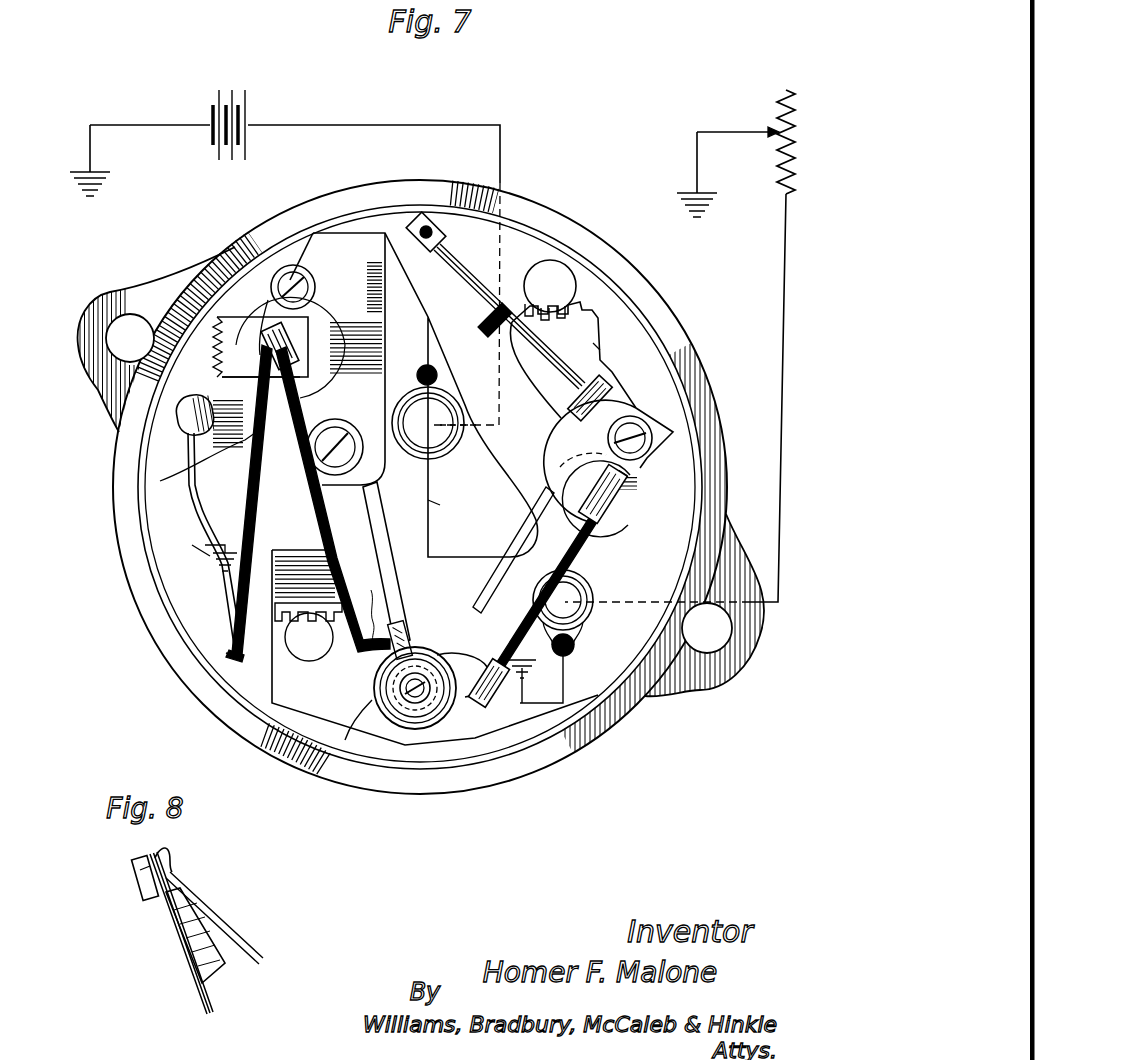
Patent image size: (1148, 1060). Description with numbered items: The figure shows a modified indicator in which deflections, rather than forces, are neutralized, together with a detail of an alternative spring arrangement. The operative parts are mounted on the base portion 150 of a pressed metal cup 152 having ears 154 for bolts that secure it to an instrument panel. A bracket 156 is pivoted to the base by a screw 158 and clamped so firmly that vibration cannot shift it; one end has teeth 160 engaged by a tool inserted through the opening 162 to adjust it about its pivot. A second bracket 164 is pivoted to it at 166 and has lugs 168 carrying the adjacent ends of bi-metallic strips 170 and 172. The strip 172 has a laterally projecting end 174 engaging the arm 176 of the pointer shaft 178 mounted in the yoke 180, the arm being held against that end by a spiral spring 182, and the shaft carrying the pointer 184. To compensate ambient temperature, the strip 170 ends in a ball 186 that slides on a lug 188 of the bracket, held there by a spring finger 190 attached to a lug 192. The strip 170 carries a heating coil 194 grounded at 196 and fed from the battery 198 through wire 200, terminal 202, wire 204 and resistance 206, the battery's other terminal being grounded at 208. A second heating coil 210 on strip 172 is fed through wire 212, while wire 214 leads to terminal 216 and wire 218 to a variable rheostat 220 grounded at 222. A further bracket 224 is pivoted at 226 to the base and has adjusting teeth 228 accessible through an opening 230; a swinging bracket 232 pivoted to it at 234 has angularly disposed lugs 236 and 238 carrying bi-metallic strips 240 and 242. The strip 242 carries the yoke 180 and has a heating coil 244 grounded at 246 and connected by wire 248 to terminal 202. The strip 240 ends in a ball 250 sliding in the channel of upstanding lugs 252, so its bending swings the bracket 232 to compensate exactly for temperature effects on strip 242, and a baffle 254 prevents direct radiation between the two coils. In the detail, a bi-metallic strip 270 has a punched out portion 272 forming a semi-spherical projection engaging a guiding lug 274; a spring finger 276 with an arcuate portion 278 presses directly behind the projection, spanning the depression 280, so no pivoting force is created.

In FIG. 7, the base portion 150 is at (178, 606).
In FIG. 7, the pressed metal cup 152 is at (142, 512).
In FIG. 7, the ears 154 is at (112, 300).
In FIG. 7, the bracket 156 is at (382, 374).
In FIG. 7, the screw 158 is at (348, 460).
In FIG. 7, the teeth 160 is at (325, 622).
In FIG. 7, the opening 162 is at (302, 652).
In FIG. 7, the second bracket 164 is at (258, 280).
In FIG. 7, the pivot 166 is at (300, 268).
In FIG. 7, the lugs 168 is at (245, 327).
In FIG. 7, the bi-metallic strip 170 is at (222, 377).
In FIG. 7, the bi-metallic strip 172 is at (264, 388).
In FIG. 7, the laterally projecting end 174 is at (368, 606).
In FIG. 7, the arm 176 is at (403, 628).
In FIG. 7, the pointer shaft 178 is at (410, 700).
In FIG. 7, the yoke 180 is at (428, 720).
In FIG. 7, the spiral spring 182 is at (395, 715).
In FIG. 7, the pointer 184 is at (393, 581).
In FIG. 7, the ball 186 is at (228, 652).
In FIG. 7, the lug 188 is at (240, 662).
In FIG. 7, the spring finger 190 is at (190, 536).
In FIG. 7, the lug 192 is at (180, 418).
In FIG. 7, the heating coil 194 is at (160, 481).
In FIG. 7, the ground 196 is at (190, 554).
In FIG. 7, the battery 198 is at (232, 90).
In FIG. 7, the wire 200 is at (364, 125).
In FIG. 7, the terminal 202 is at (440, 440).
In FIG. 7, the wire 204 is at (355, 233).
In FIG. 7, the resistance 206 is at (222, 345).
In FIG. 7, the ground 208 is at (80, 170).
In FIG. 7, the second heating coil 210 is at (306, 498).
In FIG. 7, the wire 212 is at (302, 392).
In FIG. 7, the wire 214 is at (520, 735).
In FIG. 7, the terminal 216 is at (592, 612).
In FIG. 7, the wire 218 is at (778, 462).
In FIG. 7, the variable rheostat 220 is at (778, 178).
In FIG. 7, the ground 222 is at (680, 203).
In FIG. 7, the bracket 224 is at (595, 345).
In FIG. 7, the pivot 226 is at (627, 528).
In FIG. 7, the adjusting teeth 228 is at (580, 300).
In FIG. 7, the opening 230 is at (570, 272).
In FIG. 7, the swinging bracket 232 is at (550, 420).
In FIG. 7, the pivot 234 is at (652, 438).
In FIG. 7, the lug 236 is at (602, 388).
In FIG. 7, the lug 238 is at (616, 492).
In FIG. 7, the bi-metallic strip 240 is at (586, 353).
In FIG. 7, the bi-metallic strip 242 is at (582, 517).
In FIG. 7, the heating coil 244 is at (508, 628).
In FIG. 7, the ground 246 is at (545, 695).
In FIG. 7, the wire 248 is at (432, 505).
In FIG. 7, the ball 250 is at (446, 232).
In FIG. 7, the upstanding lugs 252 is at (427, 222).
In FIG. 7, the baffle 254 is at (513, 549).
In FIG. 8, the bi-metallic strip 270 is at (180, 963).
In FIG. 8, the punched out portion 272 is at (148, 860).
In FIG. 8, the guiding lug 274 is at (136, 876).
In FIG. 8, the spring finger 276 is at (248, 944).
In FIG. 8, the arcuate portion 278 is at (172, 862).
In FIG. 8, the depression 280 is at (162, 860).